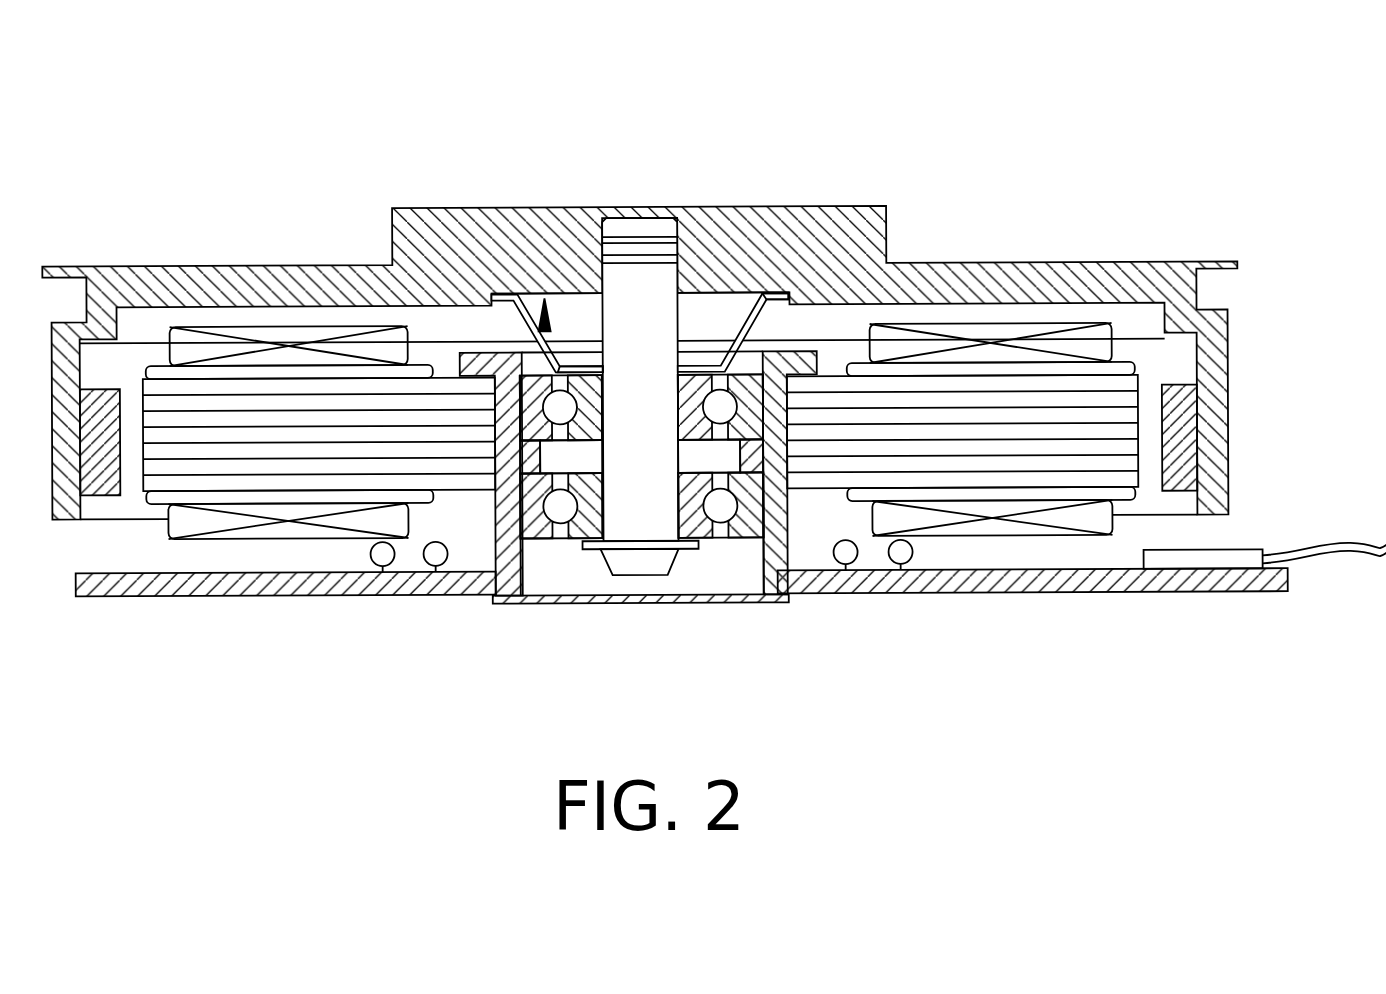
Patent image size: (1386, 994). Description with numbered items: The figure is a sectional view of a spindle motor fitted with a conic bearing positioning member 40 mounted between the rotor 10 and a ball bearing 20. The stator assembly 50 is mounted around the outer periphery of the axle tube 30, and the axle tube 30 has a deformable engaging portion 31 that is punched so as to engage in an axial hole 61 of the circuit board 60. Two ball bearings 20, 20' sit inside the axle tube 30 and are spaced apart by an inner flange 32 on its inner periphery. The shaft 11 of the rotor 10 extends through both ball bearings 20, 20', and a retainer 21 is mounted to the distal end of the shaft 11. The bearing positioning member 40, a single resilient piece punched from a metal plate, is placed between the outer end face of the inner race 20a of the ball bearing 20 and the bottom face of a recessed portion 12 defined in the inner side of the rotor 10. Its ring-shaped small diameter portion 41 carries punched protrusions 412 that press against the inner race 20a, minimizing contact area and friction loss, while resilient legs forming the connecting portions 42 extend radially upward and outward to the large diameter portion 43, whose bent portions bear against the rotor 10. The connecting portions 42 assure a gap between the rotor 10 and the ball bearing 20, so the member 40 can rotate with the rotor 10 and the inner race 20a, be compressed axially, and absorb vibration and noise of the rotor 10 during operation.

The rotor 10 is at (490, 207).
The shaft 11 is at (647, 232).
The recessed portion 12 is at (688, 300).
The ball bearing 20 is at (639, 525).
The ball bearing 20' is at (640, 619).
The inner race 20a is at (687, 407).
The retainer 21 is at (660, 552).
The axle tube 30 is at (787, 583).
The deformable engaging portion 31 is at (740, 473).
The inner flange 32 is at (750, 443).
The bearing positioning member 40 is at (537, 297).
The small diameter portion 41 is at (690, 362).
The protrusions 412 is at (578, 368).
The connecting portions 42 is at (758, 298).
The large diameter portion 43 is at (772, 292).
The stator assembly 50 is at (1072, 403).
The circuit board 60 is at (1113, 582).
The axial hole 61 is at (790, 500).